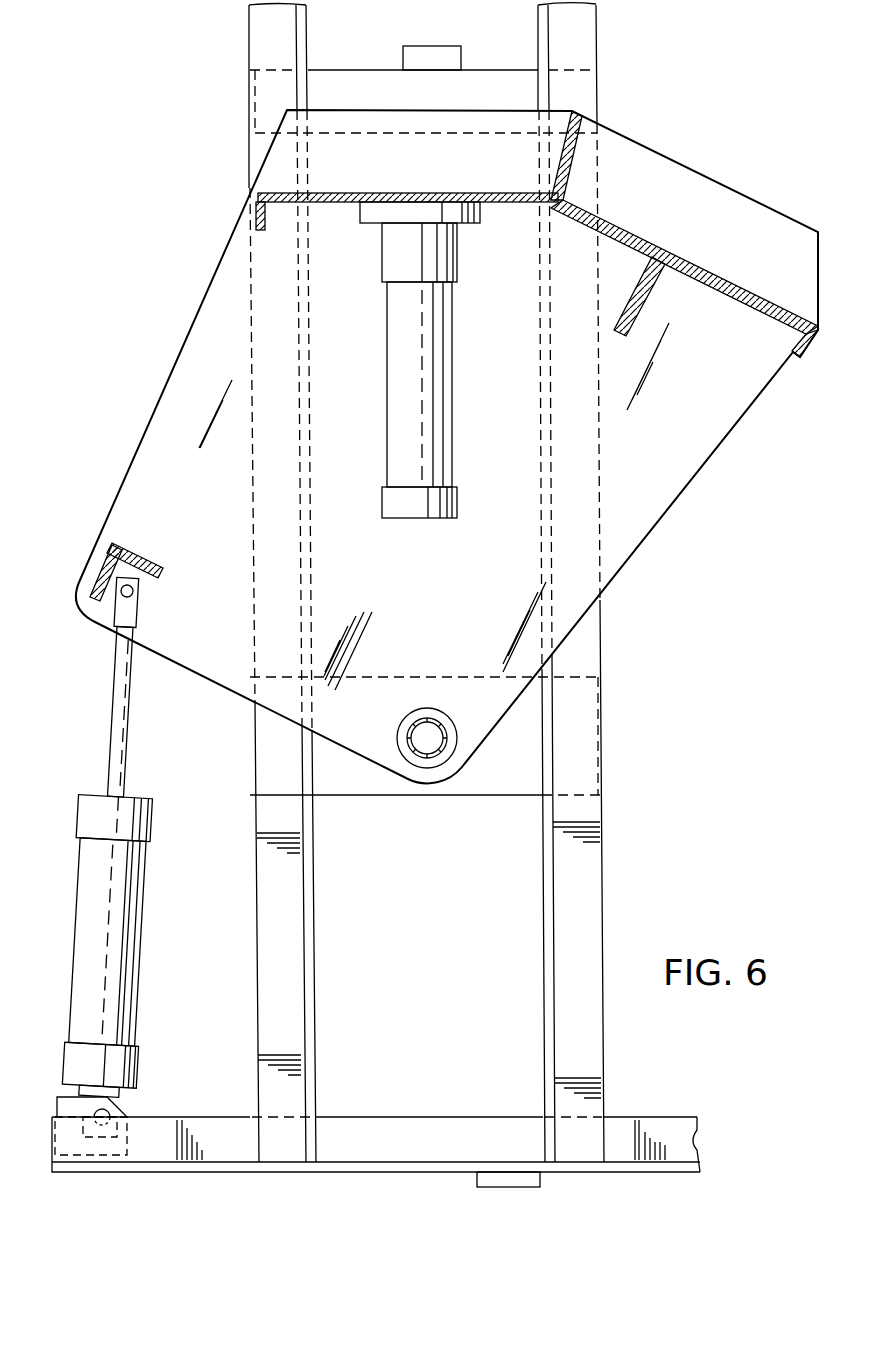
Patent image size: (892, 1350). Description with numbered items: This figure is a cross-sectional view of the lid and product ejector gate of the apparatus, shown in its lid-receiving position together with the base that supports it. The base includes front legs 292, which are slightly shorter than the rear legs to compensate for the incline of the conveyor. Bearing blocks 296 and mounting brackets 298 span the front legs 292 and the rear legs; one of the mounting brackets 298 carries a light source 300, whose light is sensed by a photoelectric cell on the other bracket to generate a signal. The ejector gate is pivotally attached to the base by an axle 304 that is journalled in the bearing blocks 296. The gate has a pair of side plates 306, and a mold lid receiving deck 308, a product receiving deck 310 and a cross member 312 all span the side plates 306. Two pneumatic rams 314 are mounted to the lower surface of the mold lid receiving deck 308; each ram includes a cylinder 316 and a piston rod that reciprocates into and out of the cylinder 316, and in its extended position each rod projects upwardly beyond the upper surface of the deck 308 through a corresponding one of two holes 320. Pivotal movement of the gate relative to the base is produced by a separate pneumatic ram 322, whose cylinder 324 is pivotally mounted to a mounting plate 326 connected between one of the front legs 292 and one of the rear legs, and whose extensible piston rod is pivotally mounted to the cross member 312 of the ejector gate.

The front legs 292 is at (426, 582).
The bearing blocks 296 is at (426, 759).
The mounting brackets 298 is at (423, 84).
The light source 300 is at (416, 39).
The axle 304 is at (425, 700).
The side plates 306 is at (447, 446).
The mold lid receiving deck 308 is at (639, 234).
The product receiving deck 310 is at (656, 261).
The cross member 312 is at (130, 547).
The pneumatic rams 314 is at (399, 360).
The cylinder 316 is at (387, 384).
The holes 320 is at (407, 189).
The pneumatic ram 322 is at (139, 866).
The cylinder 324 is at (143, 947).
The mounting plate 326 is at (137, 866).